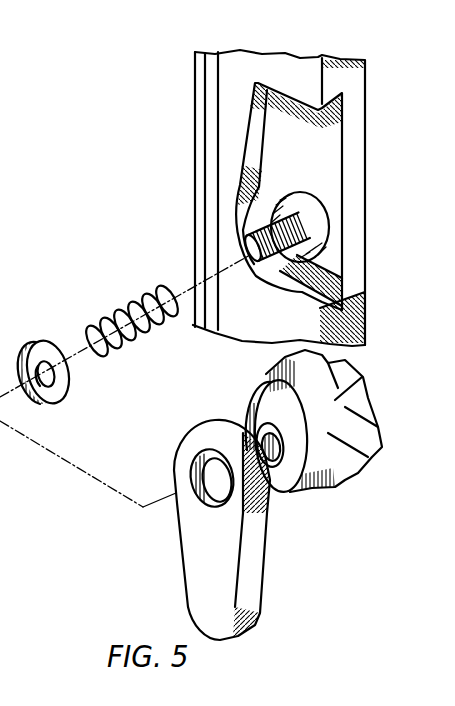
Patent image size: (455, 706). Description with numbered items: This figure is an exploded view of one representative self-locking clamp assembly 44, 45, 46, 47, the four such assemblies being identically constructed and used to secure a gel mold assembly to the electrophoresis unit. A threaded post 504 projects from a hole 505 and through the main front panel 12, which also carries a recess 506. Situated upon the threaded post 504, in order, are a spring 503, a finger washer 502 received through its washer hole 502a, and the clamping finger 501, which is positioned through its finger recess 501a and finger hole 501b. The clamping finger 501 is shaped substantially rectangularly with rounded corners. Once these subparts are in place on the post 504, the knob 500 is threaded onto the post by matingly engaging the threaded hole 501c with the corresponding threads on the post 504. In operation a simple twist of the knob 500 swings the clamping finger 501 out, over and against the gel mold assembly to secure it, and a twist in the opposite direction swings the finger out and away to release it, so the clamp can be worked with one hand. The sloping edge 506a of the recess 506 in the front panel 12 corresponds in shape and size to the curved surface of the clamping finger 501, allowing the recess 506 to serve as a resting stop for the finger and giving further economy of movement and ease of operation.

The front panel 12 is at (232, 62).
The knob 500 is at (290, 459).
The clamping finger 501 is at (183, 530).
The finger recess 501a is at (144, 505).
The finger hole 501b is at (182, 470).
The threaded hole 501c is at (254, 412).
The finger washer 502 is at (60, 370).
The washer hole 502a is at (33, 347).
The spring 503 is at (114, 356).
The threaded post 504 is at (243, 255).
The hole 505 is at (298, 194).
The recess 506 is at (305, 168).
The sloping edge 506a is at (270, 283).
The self-locking clamp assembly 44 is at (348, 388).
The self-locking clamp assembly 45 is at (361, 417).
The self-locking clamp assembly 46 is at (348, 445).
The self-locking clamp assembly 47 is at (333, 375).